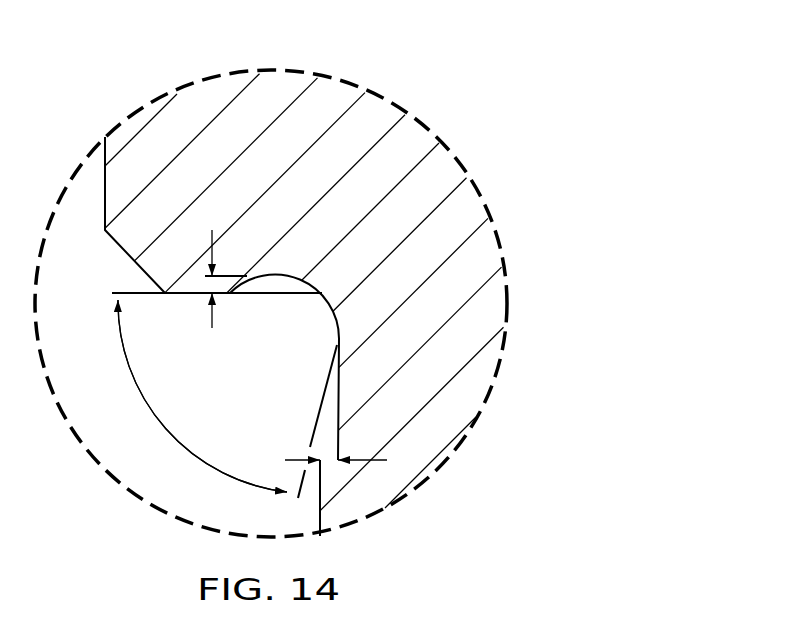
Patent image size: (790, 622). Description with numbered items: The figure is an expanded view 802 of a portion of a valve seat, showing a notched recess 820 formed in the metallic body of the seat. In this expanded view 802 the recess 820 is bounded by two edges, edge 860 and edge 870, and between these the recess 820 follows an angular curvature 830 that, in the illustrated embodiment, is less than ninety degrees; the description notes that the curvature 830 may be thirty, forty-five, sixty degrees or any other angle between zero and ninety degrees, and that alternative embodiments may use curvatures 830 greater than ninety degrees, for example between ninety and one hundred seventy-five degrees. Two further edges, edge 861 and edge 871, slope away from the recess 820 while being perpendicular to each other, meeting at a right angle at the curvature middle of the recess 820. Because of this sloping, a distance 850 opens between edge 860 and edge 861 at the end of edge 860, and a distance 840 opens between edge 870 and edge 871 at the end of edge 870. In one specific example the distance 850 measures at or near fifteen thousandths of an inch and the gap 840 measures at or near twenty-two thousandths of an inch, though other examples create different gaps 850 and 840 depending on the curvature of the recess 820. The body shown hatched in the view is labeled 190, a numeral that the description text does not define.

The seal body 190 is at (214, 77).
The expanded view 802 is at (353, 86).
The notched recess 820 is at (337, 341).
The angular curvature 830 is at (131, 372).
The distance 840 is at (297, 457).
The distance 850 is at (214, 320).
The edge 860 is at (188, 297).
The edge 861 is at (232, 274).
The edge 870 is at (320, 500).
The edge 871 is at (340, 406).